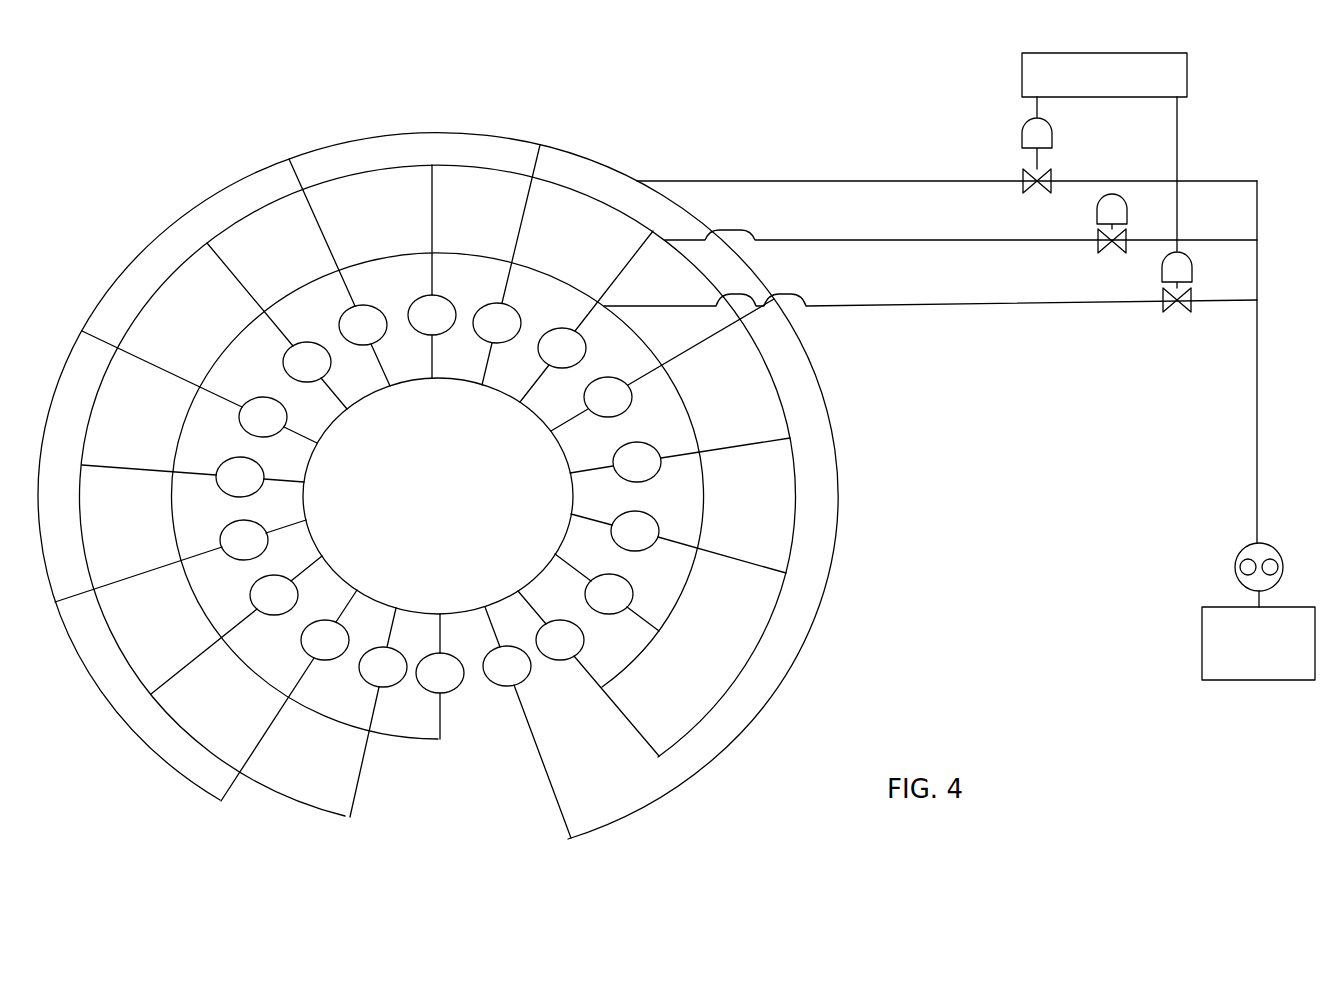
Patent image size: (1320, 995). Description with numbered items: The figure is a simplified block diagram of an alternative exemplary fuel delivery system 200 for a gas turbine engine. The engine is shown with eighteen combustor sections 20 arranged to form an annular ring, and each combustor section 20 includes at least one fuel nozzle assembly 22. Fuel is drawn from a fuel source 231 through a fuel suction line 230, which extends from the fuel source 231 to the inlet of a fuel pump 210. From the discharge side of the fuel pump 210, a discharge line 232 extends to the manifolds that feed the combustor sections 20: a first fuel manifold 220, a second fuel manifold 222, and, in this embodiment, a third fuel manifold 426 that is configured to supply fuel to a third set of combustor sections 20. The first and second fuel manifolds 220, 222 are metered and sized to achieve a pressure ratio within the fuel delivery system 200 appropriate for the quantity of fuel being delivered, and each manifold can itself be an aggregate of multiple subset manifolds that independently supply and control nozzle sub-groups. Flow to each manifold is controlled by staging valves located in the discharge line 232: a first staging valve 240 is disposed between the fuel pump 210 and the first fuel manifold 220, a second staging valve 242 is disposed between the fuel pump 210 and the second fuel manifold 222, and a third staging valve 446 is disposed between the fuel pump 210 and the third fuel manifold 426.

The fuel delivery system 200 is at (222, 128).
The combustor section 20 is at (439, 334).
The fuel nozzle assembly 22 is at (437, 295).
The first fuel manifold 220 is at (594, 160).
The second fuel manifold 222 is at (787, 400).
The third fuel manifold 426 is at (797, 503).
The first staging valve 240 is at (1040, 193).
The second staging valve 242 is at (1112, 253).
The third staging valve 446 is at (1176, 312).
The discharge line 232 is at (1255, 482).
The fuel pump 210 is at (1236, 567).
The fuel suction line 230 is at (1255, 598).
The fuel source 231 is at (1280, 658).